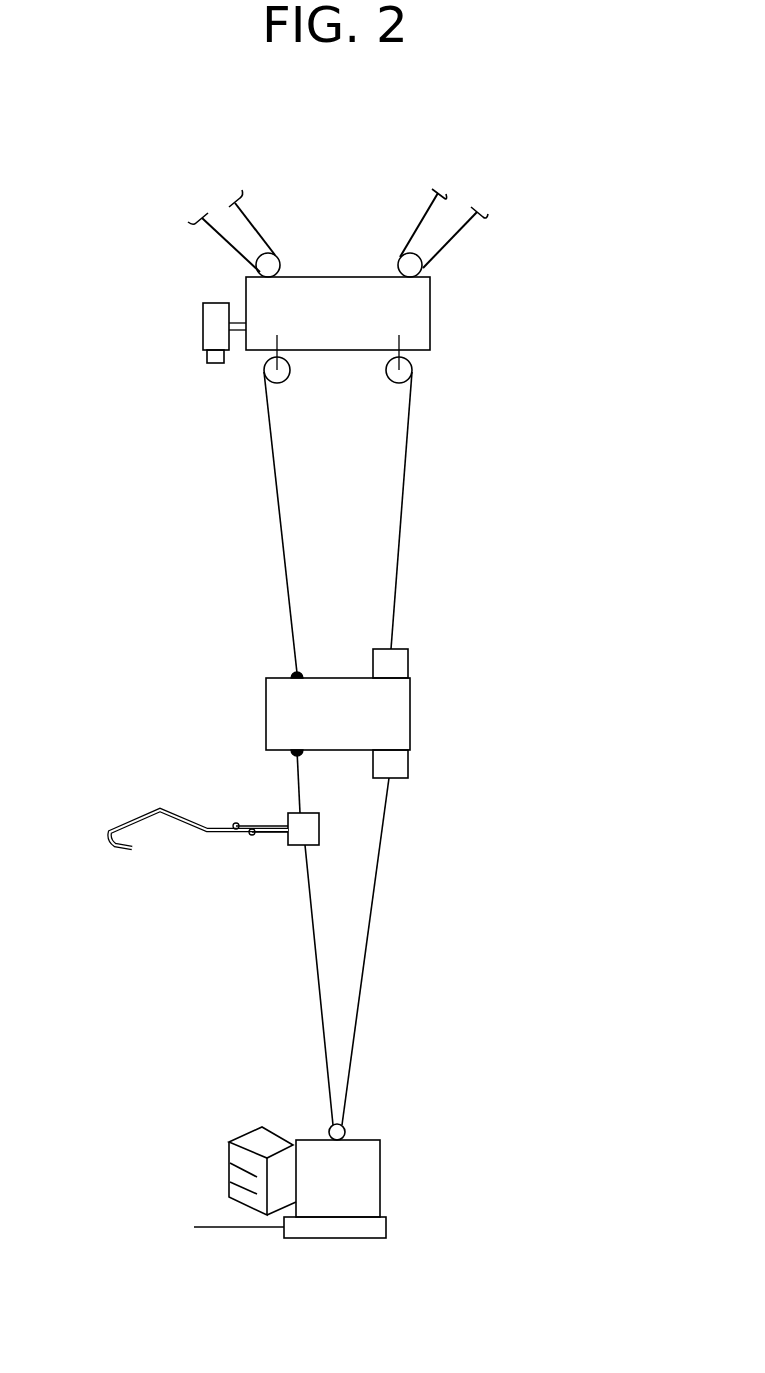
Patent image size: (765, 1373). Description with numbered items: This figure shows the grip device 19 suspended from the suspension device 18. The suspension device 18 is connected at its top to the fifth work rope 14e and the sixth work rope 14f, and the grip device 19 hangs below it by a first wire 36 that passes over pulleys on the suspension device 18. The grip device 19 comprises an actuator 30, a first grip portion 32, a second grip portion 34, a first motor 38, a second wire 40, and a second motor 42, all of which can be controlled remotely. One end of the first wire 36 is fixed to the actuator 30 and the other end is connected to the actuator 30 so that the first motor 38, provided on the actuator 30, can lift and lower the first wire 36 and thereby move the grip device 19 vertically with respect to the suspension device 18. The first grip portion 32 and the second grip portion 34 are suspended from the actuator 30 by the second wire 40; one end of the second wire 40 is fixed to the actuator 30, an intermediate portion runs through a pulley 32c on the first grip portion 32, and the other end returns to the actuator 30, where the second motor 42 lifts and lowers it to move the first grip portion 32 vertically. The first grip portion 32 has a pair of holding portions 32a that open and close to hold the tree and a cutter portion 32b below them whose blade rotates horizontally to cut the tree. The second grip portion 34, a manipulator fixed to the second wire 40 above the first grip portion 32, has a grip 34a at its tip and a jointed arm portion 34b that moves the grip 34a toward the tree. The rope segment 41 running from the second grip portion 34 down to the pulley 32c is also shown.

The fifth work rope 14e is at (250, 218).
The sixth work rope 14f is at (430, 220).
The suspension device 18 is at (413, 307).
The grip device 19 is at (351, 679).
The actuator 30 is at (263, 717).
The first grip portion 32 is at (367, 1185).
The holding portions 32a is at (262, 1143).
The cutter portion 32b is at (222, 1228).
The pulley 32c is at (340, 1123).
The second grip portion 34 is at (290, 812).
The grip 34a is at (147, 812).
The arm portion 34b is at (263, 837).
The first wire 36 is at (407, 467).
The first motor 38 is at (398, 648).
The second wire 40 is at (375, 910).
The rope 41 is at (320, 992).
The second motor 42 is at (431, 758).